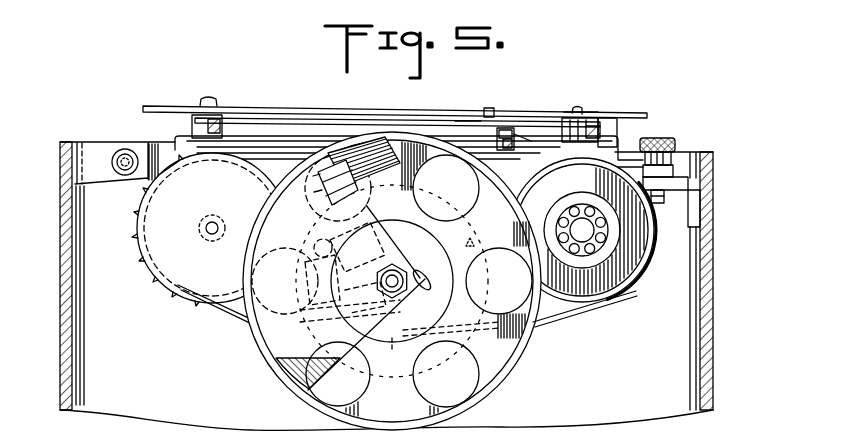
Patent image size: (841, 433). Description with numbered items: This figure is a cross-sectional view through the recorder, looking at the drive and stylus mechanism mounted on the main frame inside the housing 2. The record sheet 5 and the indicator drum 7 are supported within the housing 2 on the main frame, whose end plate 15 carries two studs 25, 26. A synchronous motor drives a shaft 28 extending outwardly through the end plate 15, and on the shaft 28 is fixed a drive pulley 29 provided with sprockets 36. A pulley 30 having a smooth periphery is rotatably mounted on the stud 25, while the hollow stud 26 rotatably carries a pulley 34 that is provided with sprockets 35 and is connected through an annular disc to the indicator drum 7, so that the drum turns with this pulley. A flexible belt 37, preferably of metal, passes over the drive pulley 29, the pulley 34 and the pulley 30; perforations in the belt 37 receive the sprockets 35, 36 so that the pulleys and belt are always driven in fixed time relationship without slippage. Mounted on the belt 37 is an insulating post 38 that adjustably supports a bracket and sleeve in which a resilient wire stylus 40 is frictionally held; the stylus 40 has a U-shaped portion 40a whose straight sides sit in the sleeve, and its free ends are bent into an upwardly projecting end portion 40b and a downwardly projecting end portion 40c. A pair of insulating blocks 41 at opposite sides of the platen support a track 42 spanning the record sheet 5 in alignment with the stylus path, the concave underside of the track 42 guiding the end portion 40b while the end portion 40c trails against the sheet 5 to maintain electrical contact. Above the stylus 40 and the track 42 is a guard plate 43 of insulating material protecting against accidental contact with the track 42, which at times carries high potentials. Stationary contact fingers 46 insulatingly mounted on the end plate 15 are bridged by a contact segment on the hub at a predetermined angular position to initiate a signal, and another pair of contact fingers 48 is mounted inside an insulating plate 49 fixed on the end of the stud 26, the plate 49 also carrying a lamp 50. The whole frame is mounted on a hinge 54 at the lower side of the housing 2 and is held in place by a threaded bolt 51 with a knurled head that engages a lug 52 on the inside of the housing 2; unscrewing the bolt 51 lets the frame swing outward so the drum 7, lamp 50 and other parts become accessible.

The housing 2 is at (62, 158).
The record sheet 5 is at (472, 122).
The indicator drum 7 is at (520, 348).
The end plate 15 is at (543, 307).
The stud 25 is at (578, 228).
The stud 26 is at (395, 270).
The shaft 28 is at (212, 221).
The drive pulley 29 is at (160, 247).
The pulley 30 is at (632, 243).
The pulley 34 is at (473, 242).
The sprockets 35 is at (477, 213).
The sprockets 36 is at (135, 208).
The belt 37 is at (233, 313).
The post 38 is at (489, 108).
The stylus 40 is at (542, 123).
The U-shaped portion 40a is at (515, 128).
The upwardly projecting end portion 40b is at (532, 132).
The downwardly projecting end portion 40c is at (556, 112).
The insulating blocks 41 is at (190, 128).
The track 42 is at (302, 118).
The guard plate 43 is at (248, 107).
The contact fingers 46 is at (388, 353).
The contact fingers 48 is at (320, 224).
The insulating plate 49 is at (288, 343).
The lamp 50 is at (372, 150).
The threaded bolt 51 is at (665, 137).
The lug 52 is at (678, 184).
The hinge 54 is at (130, 137).